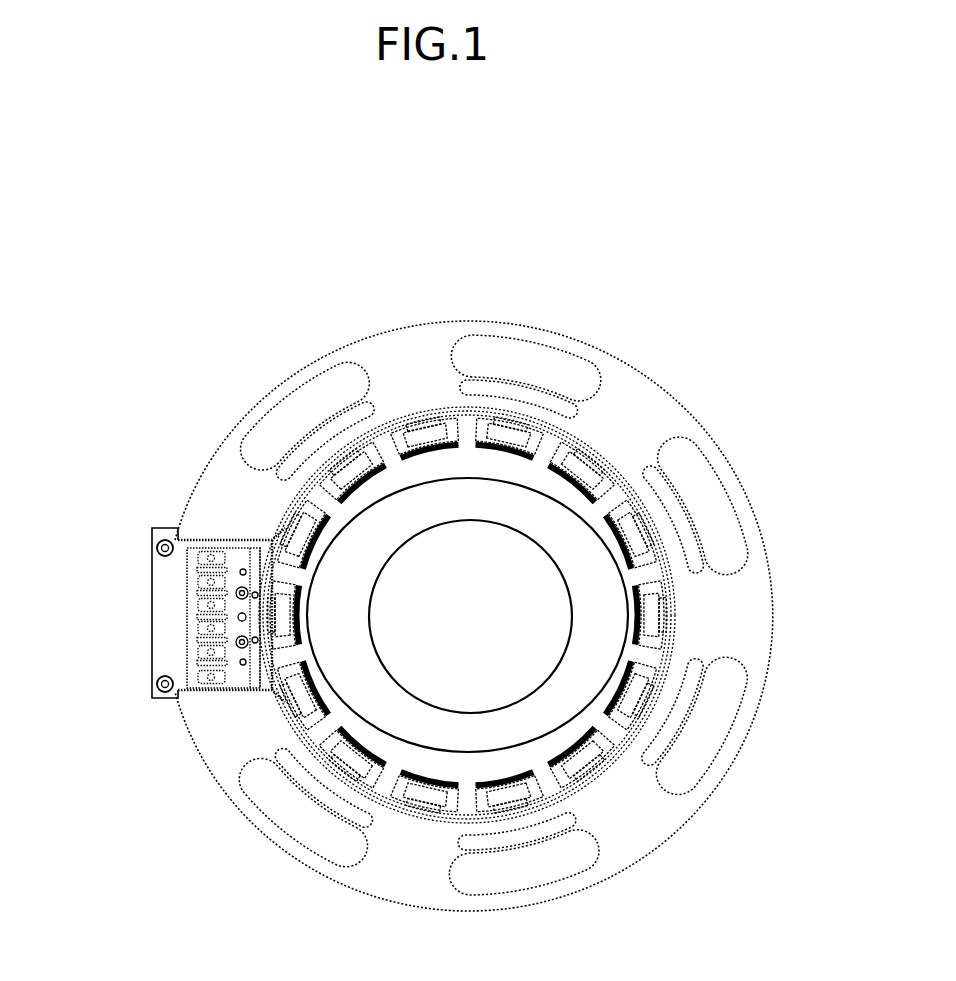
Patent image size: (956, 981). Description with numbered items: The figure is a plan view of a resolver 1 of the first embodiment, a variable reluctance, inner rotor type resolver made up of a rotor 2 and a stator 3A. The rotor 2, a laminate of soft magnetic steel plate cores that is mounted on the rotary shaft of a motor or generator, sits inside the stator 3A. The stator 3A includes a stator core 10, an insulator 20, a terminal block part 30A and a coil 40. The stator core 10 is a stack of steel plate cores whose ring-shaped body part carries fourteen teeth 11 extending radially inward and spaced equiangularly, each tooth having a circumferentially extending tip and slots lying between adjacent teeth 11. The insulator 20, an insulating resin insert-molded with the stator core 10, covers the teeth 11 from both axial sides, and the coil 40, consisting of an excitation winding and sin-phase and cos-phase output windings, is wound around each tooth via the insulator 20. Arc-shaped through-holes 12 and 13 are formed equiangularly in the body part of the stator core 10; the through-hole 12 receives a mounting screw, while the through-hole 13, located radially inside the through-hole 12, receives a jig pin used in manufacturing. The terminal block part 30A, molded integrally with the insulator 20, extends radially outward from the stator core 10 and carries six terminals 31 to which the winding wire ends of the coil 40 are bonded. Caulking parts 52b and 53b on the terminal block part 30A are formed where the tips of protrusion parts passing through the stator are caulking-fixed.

The resolver 1 is at (453, 224).
The rotor 2 is at (415, 697).
The stator 3A is at (622, 332).
The stator core 10 is at (758, 625).
The teeth 11 is at (578, 485).
The through-hole 12 is at (308, 421).
The through-hole 13 is at (696, 509).
The insulator 20 is at (432, 440).
The terminals 31 is at (212, 550).
The coil 40 is at (508, 440).
The terminal block part 30A is at (162, 630).
The caulking part 52b is at (248, 657).
The caulking part 53b is at (165, 697).